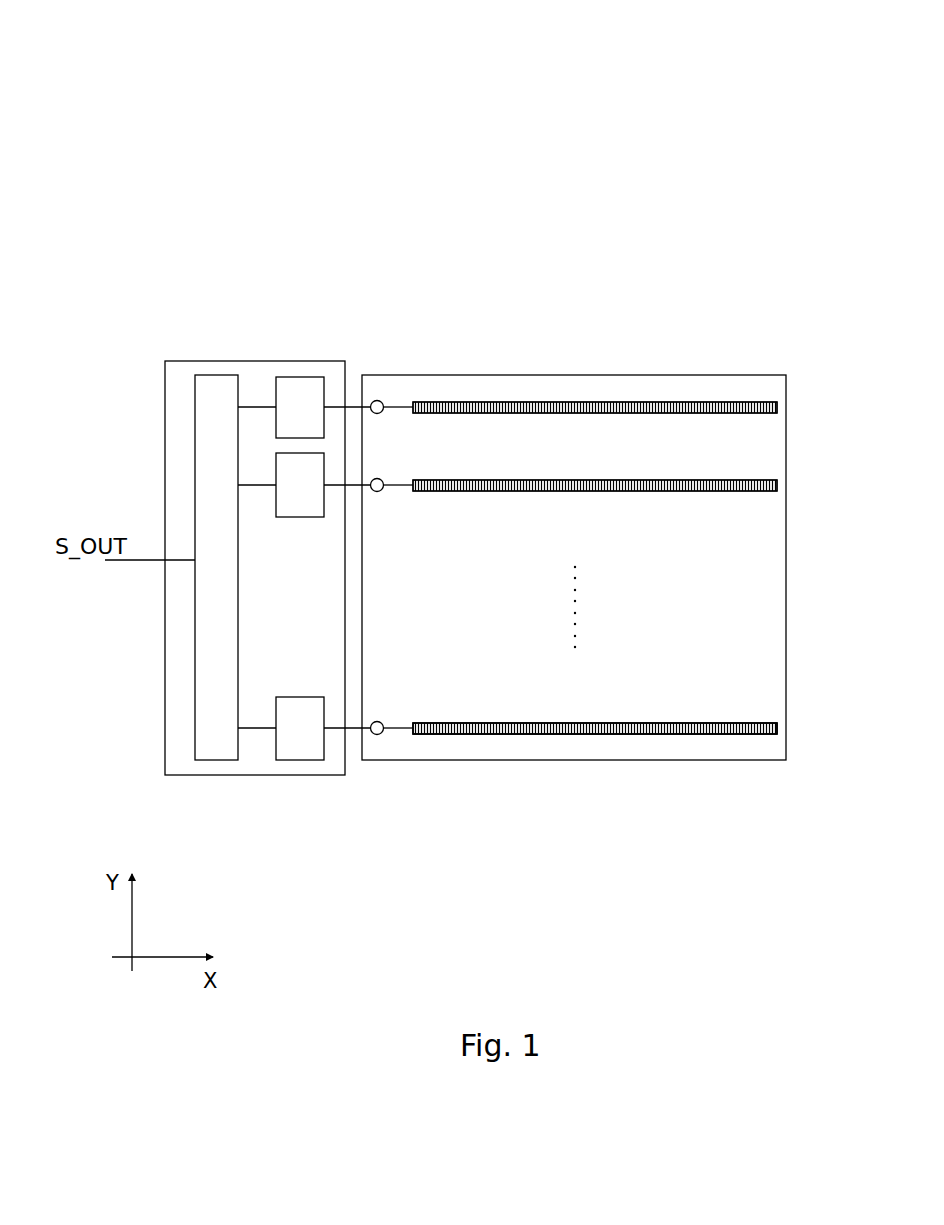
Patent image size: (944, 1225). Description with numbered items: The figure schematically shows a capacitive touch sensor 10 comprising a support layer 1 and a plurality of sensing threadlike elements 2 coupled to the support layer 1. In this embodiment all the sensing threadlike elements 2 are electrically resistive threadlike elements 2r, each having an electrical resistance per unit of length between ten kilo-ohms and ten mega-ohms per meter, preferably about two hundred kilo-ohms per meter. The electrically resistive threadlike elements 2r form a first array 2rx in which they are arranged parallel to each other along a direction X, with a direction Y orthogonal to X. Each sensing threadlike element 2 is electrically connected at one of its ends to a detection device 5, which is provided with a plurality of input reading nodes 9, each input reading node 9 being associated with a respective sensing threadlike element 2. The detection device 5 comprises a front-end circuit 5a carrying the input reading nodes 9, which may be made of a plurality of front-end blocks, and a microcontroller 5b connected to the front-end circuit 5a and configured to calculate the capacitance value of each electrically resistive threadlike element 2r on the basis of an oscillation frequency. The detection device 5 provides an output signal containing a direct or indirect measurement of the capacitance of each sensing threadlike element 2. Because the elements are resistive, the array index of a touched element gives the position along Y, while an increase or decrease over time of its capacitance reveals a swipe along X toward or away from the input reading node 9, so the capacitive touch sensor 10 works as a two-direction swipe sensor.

The capacitive touch sensor 10 is at (758, 101).
The detection device 5 is at (164, 359).
The microcontroller 5b is at (219, 372).
The front-end circuit 5a is at (298, 372).
The support layer 1 is at (733, 762).
The input reading nodes 9 is at (379, 398).
The sensing threadlike elements 2 is at (741, 398).
The electrically resistive threadlike elements 2r is at (777, 407).
The first array of electrically resistive threadlike elements 2rx is at (499, 736).